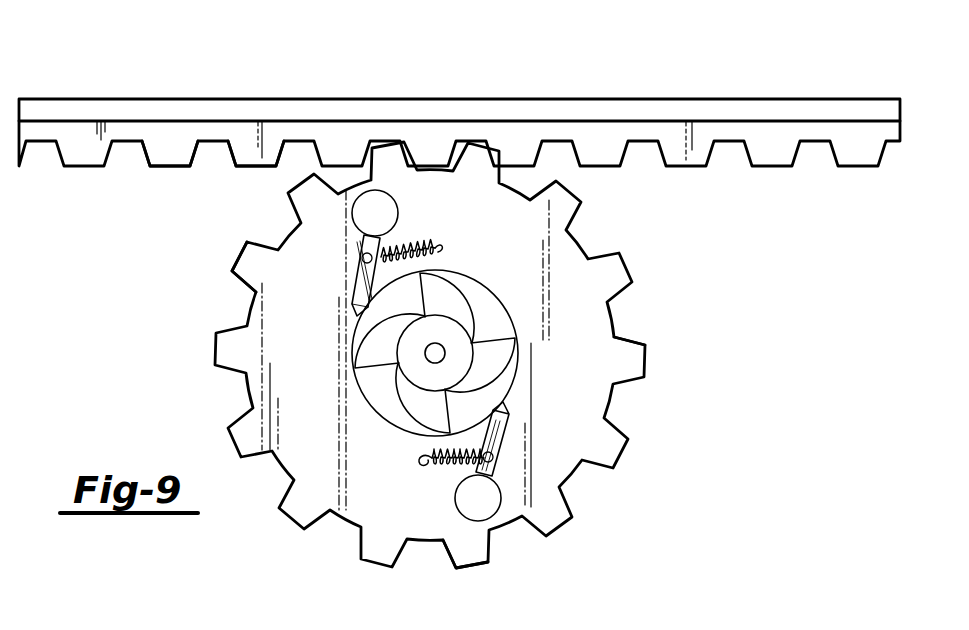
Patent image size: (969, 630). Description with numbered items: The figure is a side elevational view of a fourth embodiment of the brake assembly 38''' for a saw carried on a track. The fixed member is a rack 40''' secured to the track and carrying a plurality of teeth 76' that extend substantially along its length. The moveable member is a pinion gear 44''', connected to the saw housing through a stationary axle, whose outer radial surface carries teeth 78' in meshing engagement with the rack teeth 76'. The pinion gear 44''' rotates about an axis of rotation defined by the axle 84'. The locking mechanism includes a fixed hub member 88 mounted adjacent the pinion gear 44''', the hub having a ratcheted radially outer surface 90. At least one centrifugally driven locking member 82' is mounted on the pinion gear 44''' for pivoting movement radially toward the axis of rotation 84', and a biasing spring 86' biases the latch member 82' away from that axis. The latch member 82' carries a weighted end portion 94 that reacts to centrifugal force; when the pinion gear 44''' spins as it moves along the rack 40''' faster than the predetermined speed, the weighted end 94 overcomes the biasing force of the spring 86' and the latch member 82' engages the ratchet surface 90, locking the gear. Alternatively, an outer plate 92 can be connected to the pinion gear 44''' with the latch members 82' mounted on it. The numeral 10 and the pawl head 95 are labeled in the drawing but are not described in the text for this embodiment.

The ratchet drive assembly 10 is at (672, 265).
The brake assembly 38''' is at (459, 93).
The rack 40''' is at (459, 97).
The pinion gear 44''' is at (446, 355).
The teeth 76' is at (207, 197).
The teeth 78' is at (197, 293).
The centrifugally driven locking member 82' is at (502, 439).
The axle 84' is at (446, 346).
The biasing spring 86' is at (432, 253).
The fixed hub member 88 is at (463, 352).
The ratcheted radially outer surface 90 is at (402, 407).
The outer plate 92 is at (615, 340).
The weighted end portion 94 is at (492, 559).
The pawl head 95 is at (500, 495).